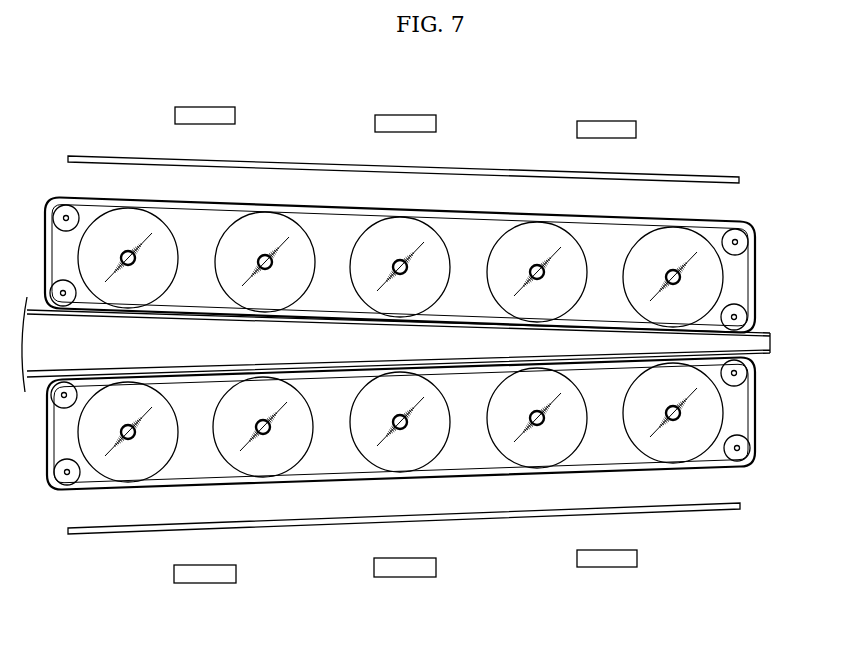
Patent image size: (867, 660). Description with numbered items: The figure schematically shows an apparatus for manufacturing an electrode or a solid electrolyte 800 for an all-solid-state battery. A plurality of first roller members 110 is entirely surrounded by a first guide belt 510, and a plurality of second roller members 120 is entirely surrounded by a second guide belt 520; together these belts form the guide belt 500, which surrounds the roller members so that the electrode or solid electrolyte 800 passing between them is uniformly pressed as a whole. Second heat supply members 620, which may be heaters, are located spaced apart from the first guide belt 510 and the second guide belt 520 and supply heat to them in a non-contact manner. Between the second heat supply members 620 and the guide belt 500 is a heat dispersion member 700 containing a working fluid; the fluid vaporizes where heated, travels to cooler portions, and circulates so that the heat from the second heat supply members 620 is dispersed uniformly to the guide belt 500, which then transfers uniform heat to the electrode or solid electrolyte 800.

The first roller members 110 is at (128, 218).
The second roller members 120 is at (129, 471).
The guide belt 500 is at (432, 339).
The first guide belt 510 is at (432, 252).
The second guide belt 520 is at (432, 440).
The second heat supply member 620 is at (605, 121).
The heat dispersion member 700 is at (491, 168).
The electrode or solid electrolyte 800 is at (762, 345).